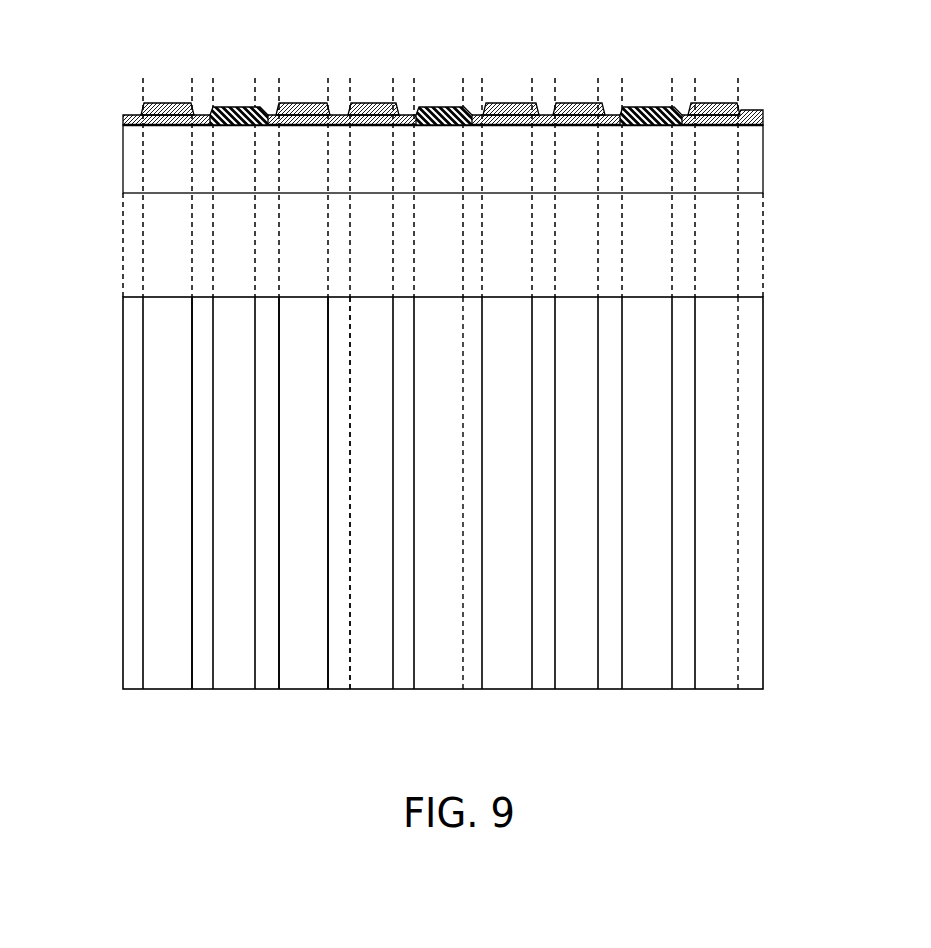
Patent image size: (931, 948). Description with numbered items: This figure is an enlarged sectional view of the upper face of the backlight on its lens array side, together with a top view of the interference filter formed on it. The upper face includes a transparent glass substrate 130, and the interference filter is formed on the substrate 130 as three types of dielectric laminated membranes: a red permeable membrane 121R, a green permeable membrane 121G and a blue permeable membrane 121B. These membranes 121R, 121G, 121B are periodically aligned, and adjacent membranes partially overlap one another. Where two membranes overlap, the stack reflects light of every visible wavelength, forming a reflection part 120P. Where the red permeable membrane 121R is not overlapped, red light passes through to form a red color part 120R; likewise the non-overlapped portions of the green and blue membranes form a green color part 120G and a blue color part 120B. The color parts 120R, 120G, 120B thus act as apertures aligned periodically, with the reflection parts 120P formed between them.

The transparent glass substrate 130 is at (748, 163).
The red permeable membrane 121R is at (203, 117).
The green permeable membrane 121G is at (238, 107).
The blue permeable membrane 121B is at (305, 107).
The reflection part 120P is at (297, 437).
The red color part 120R is at (205, 673).
The green color part 120G is at (272, 673).
The blue color part 120B is at (343, 673).